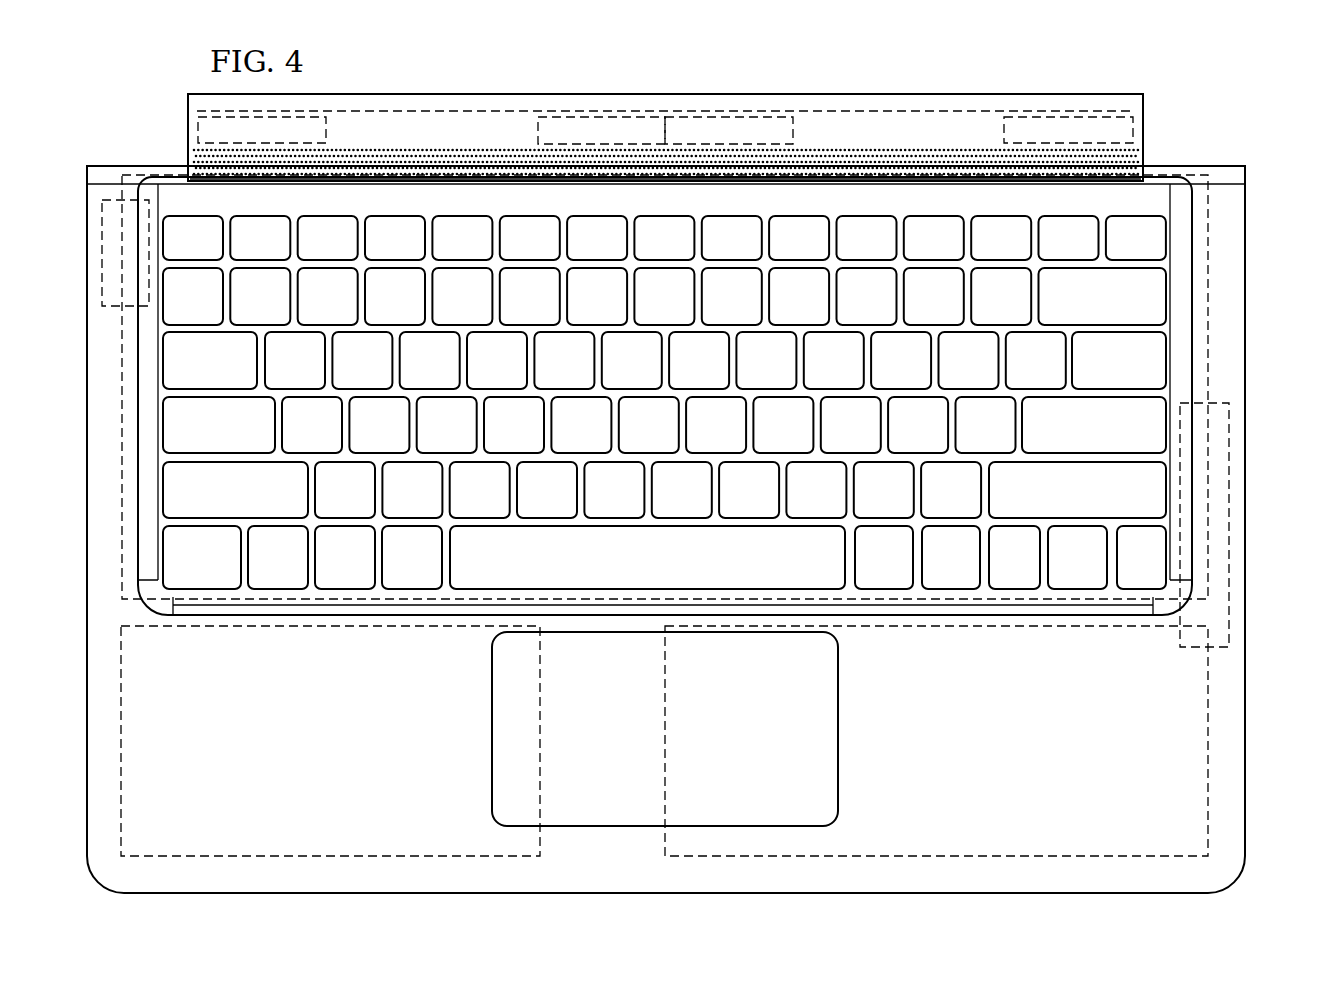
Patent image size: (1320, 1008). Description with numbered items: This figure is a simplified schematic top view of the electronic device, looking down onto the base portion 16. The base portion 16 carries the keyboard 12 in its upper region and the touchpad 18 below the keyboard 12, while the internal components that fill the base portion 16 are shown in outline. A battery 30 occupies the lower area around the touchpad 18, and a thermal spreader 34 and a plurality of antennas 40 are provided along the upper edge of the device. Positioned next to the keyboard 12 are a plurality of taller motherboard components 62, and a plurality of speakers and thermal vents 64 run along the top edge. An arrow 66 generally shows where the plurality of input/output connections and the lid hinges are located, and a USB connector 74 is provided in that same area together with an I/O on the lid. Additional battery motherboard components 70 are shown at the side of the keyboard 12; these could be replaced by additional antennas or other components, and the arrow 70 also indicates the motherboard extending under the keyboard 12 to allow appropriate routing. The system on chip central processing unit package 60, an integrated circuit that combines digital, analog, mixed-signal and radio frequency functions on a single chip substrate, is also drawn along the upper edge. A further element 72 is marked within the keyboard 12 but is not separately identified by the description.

The keyboard 12 is at (665, 424).
The base portion 16 is at (1250, 672).
The touchpad 18 is at (848, 749).
The battery 30 is at (128, 748).
The thermal spreader 34 is at (1087, 125).
The antennas 40 is at (420, 103).
The system on chip central processing unit package 60 is at (580, 125).
The taller motherboard components 62 is at (118, 228).
The speakers and thermal vents 64 is at (881, 132).
The input/output connections and lid hinges 66 is at (603, 110).
The additional battery motherboard components 70 is at (1213, 530).
The key 72 is at (524, 325).
The USB connector 74 is at (1206, 129).